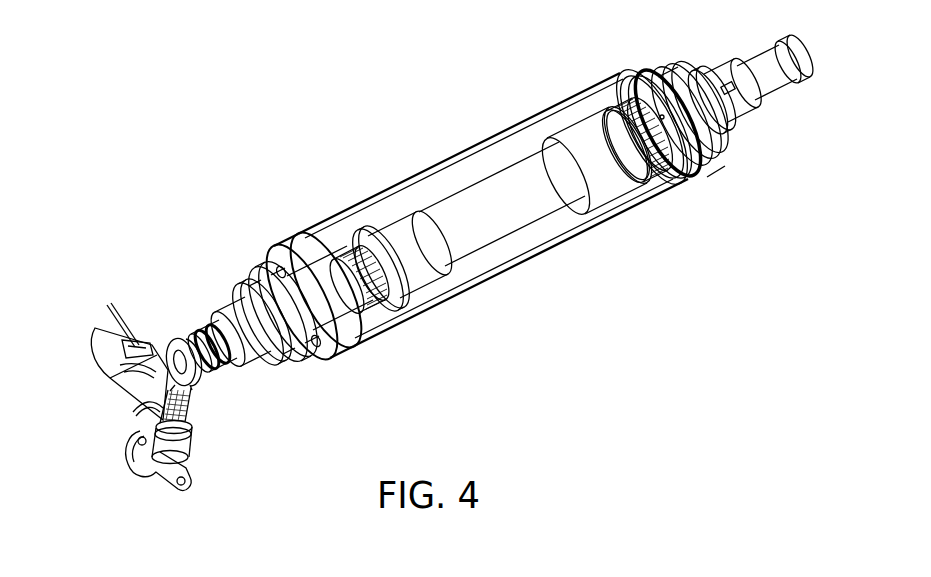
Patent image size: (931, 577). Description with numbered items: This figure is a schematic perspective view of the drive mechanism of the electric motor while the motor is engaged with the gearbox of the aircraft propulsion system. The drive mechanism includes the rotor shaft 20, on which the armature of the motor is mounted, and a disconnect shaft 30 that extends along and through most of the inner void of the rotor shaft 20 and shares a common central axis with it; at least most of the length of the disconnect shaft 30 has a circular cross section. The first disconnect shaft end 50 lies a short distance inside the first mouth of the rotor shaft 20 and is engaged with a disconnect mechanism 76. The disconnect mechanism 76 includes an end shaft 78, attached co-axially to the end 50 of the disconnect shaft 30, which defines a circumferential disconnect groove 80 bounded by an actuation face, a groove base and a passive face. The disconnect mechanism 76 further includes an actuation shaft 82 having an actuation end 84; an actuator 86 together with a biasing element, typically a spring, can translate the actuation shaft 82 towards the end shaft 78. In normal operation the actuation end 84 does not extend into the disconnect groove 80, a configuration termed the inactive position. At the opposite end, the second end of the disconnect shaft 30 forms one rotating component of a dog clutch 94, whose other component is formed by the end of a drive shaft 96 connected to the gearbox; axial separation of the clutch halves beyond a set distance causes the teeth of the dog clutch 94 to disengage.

The rotor shaft 20 is at (500, 210).
The disconnect shaft 30 is at (582, 231).
The first disconnect shaft end 50 is at (222, 318).
The disconnect mechanism 76 is at (159, 390).
The end shaft 78 is at (182, 338).
The disconnect groove 80 is at (213, 370).
The actuation shaft 82 is at (195, 408).
The actuation end 84 is at (198, 385).
The actuator 86 is at (112, 408).
The dog clutch 94 is at (743, 128).
The drive shaft 96 is at (745, 63).